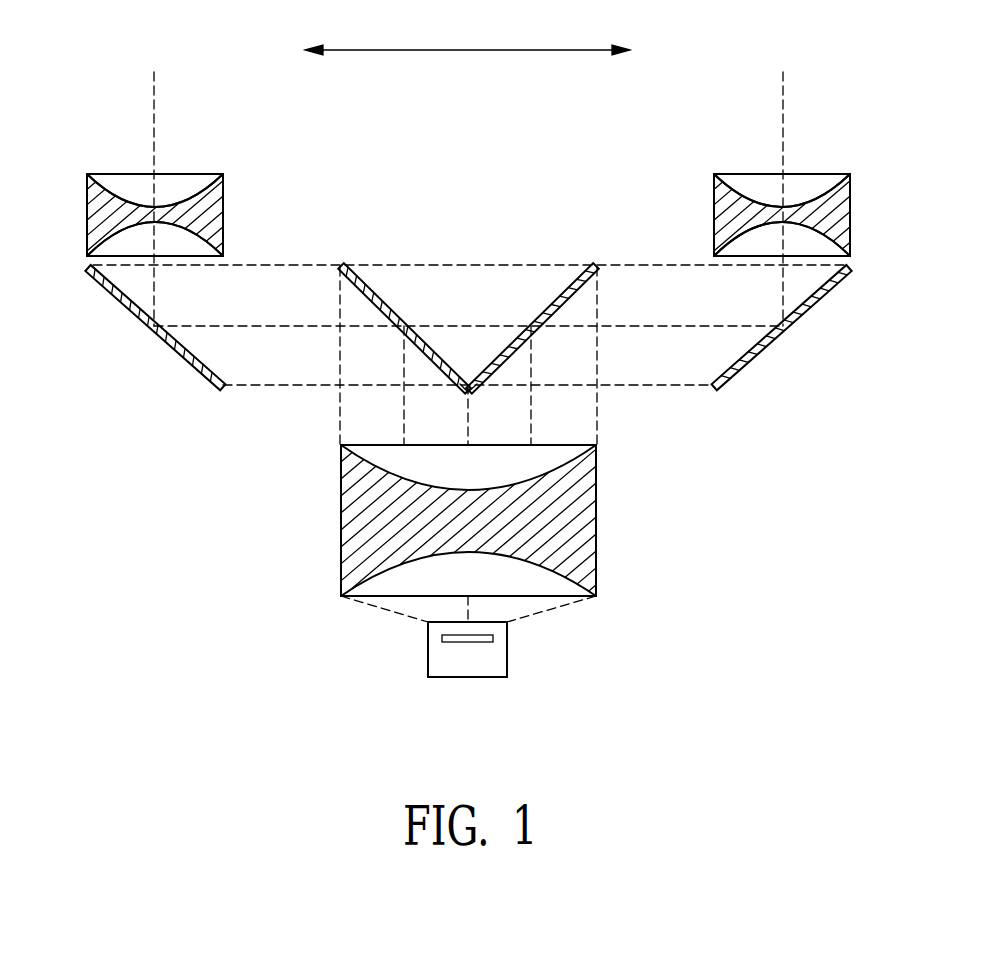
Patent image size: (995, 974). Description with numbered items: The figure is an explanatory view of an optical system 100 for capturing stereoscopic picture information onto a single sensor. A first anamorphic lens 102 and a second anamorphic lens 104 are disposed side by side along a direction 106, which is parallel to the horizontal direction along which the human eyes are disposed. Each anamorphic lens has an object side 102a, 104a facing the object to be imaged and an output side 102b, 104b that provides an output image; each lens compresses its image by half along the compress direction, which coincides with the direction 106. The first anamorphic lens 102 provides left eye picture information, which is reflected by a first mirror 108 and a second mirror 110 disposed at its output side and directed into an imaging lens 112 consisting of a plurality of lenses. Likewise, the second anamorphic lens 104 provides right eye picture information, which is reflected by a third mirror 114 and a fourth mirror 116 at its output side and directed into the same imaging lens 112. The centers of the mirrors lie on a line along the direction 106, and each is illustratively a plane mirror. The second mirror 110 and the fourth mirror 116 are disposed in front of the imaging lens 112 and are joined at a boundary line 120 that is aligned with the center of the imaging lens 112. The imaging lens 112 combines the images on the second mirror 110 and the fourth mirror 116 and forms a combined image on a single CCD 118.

The optical system 100 is at (177, 31).
The first anamorphic lens 102 is at (85, 208).
The object side 102a is at (168, 160).
The output side 102b is at (178, 282).
The second anamorphic lens 104 is at (853, 208).
The object side 104a is at (768, 162).
The output side 104b is at (757, 283).
The direction 106 is at (465, 50).
The first mirror 108 is at (148, 327).
The second mirror 110 is at (392, 302).
The imaging lens 112 is at (596, 556).
The third mirror 114 is at (790, 330).
The fourth mirror 116 is at (543, 307).
The CCD 118 is at (507, 652).
The boundary line 120 is at (467, 377).